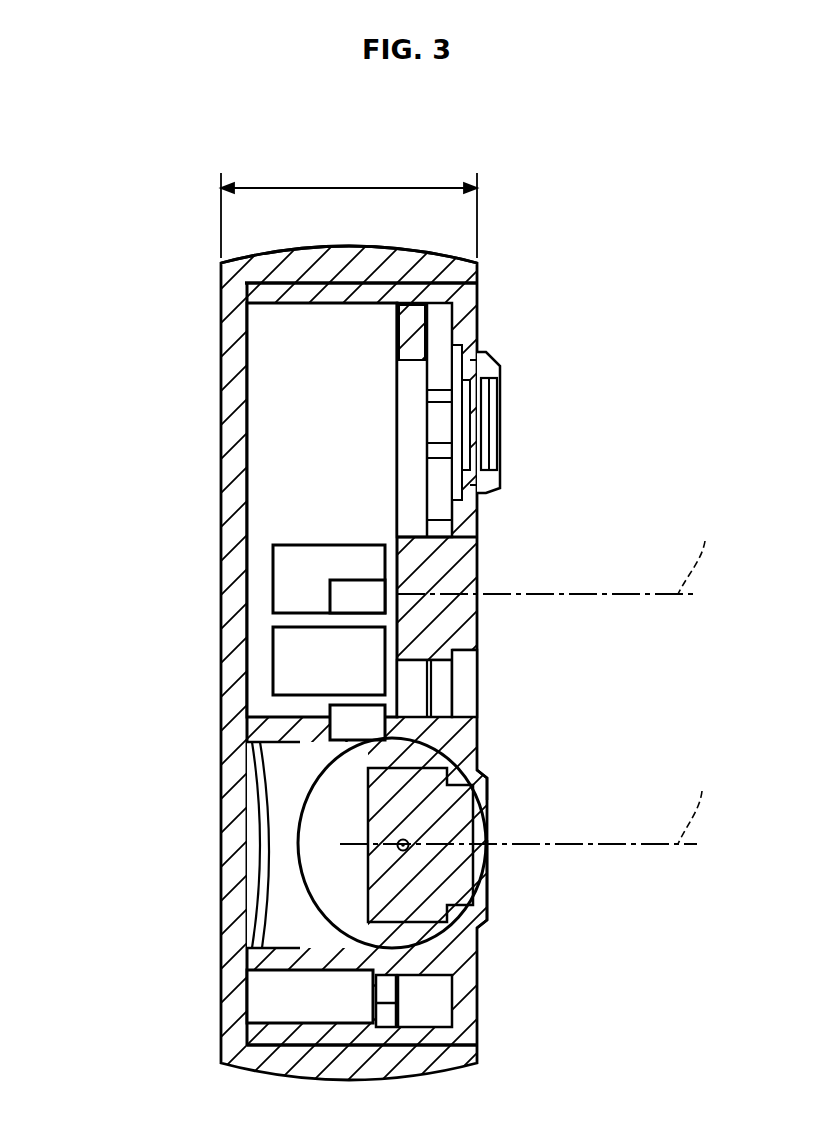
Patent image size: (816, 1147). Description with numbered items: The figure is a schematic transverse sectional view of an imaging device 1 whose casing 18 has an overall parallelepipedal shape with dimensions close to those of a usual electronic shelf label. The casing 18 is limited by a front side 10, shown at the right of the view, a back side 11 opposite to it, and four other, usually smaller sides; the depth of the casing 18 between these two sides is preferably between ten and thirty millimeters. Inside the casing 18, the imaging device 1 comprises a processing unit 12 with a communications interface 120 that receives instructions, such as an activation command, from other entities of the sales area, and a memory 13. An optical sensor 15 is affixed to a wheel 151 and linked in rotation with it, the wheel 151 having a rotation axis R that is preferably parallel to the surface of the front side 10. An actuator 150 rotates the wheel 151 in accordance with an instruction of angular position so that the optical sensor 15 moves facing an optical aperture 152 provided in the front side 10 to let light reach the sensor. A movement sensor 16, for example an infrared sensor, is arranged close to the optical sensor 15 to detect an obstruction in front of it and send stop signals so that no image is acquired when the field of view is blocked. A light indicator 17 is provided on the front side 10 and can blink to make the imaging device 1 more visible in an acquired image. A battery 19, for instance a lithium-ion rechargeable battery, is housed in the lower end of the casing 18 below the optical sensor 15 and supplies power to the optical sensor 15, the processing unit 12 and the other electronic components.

The imaging device 1 is at (102, 554).
The front side 10 is at (464, 692).
The back side 11 is at (219, 651).
The processing unit 12 is at (338, 574).
The communications interface 120 is at (370, 608).
The memory 13 is at (338, 671).
The optical sensor 15 is at (447, 828).
The actuator 150 is at (370, 734).
The wheel 151 is at (470, 769).
The optical aperture 152 is at (489, 857).
The movement sensor 16 is at (447, 585).
The light indicator 17 is at (494, 428).
The casing 18 is at (232, 446).
The battery 19 is at (323, 1010).
The rotation axis R is at (400, 842).